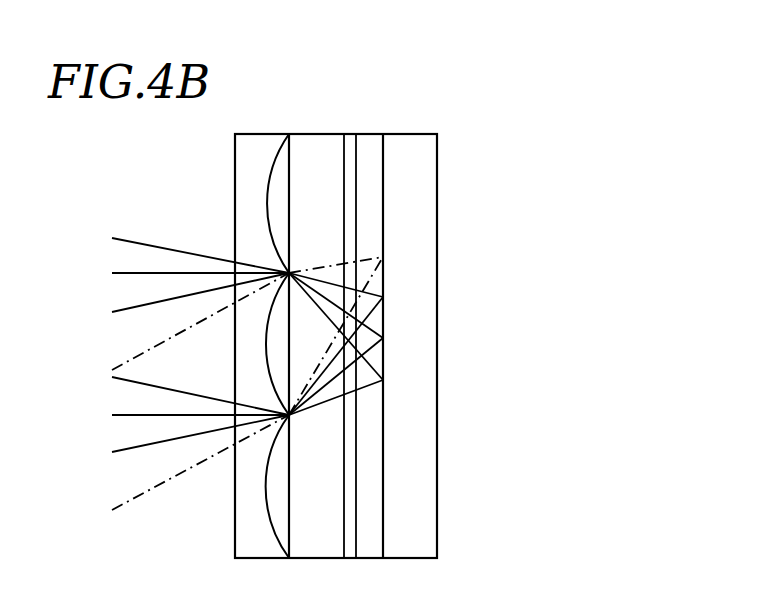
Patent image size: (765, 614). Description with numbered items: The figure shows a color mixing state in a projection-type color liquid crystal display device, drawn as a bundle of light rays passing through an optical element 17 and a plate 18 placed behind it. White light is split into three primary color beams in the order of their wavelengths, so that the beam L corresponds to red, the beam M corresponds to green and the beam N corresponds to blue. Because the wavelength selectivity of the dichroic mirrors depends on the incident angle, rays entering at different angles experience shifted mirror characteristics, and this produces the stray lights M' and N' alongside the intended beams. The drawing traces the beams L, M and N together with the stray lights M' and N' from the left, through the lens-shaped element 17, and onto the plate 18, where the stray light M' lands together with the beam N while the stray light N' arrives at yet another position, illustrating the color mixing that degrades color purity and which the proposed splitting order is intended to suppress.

The lens array 17 is at (263, 133).
The plate 18 is at (357, 133).
The L beam L is at (127, 238).
The M beam M is at (287, 345).
The stray light M' is at (171, 370).
The N beam N is at (298, 382).
The stray light N' is at (291, 373).